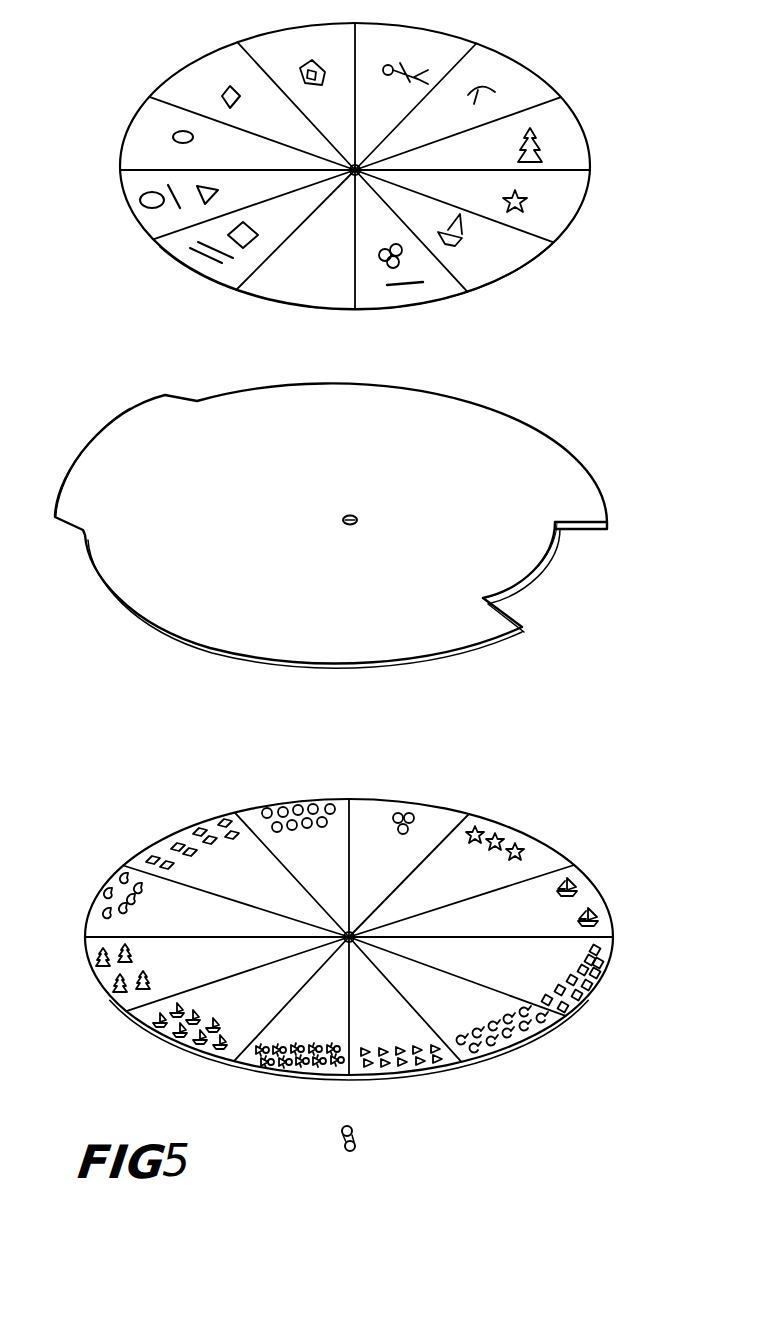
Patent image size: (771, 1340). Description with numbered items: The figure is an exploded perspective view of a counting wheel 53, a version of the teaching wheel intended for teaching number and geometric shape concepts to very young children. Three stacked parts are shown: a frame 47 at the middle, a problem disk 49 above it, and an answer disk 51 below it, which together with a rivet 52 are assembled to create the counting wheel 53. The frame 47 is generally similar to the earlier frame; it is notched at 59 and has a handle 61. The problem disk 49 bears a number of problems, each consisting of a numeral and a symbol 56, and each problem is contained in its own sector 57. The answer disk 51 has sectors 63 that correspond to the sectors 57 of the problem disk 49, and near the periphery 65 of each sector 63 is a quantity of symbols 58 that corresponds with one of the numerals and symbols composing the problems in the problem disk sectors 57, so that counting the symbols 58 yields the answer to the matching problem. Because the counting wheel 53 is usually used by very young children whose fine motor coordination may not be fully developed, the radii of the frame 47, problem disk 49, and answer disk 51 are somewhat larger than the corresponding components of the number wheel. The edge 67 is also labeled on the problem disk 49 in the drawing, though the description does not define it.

The frame 47 is at (331, 524).
The problem disk 49 is at (394, 164).
The answer disk 51 is at (365, 920).
The rivet 52 is at (357, 1135).
The counting wheel 53 is at (175, 357).
The symbol 56 is at (427, 72).
The sector 57 is at (219, 160).
The symbols 58 is at (173, 840).
The notch 59 is at (556, 558).
The handle 61 is at (92, 453).
The sectors 63 is at (477, 976).
The periphery 65 is at (540, 1035).
The disc edge 67 is at (483, 285).